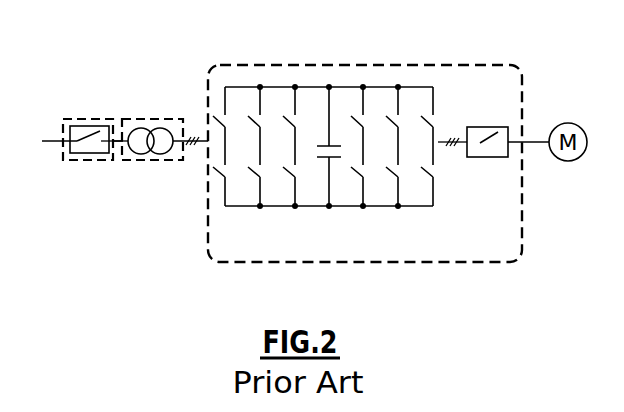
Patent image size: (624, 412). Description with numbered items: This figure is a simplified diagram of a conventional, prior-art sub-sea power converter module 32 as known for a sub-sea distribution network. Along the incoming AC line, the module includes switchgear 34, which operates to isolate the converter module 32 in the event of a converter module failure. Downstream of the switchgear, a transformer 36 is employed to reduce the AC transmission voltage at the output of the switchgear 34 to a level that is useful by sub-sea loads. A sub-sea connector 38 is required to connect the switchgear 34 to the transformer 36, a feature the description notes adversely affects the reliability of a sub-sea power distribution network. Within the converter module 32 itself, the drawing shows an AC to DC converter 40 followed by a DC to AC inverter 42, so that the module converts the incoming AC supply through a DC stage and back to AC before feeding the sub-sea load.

The sub-sea power converter module 32 is at (378, 134).
The switchgear 34 is at (94, 119).
The transformer 36 is at (142, 119).
The sub-sea connector 38 is at (117, 141).
The AC to DC converter 40 is at (270, 87).
The DC to AC inverter 42 is at (377, 87).